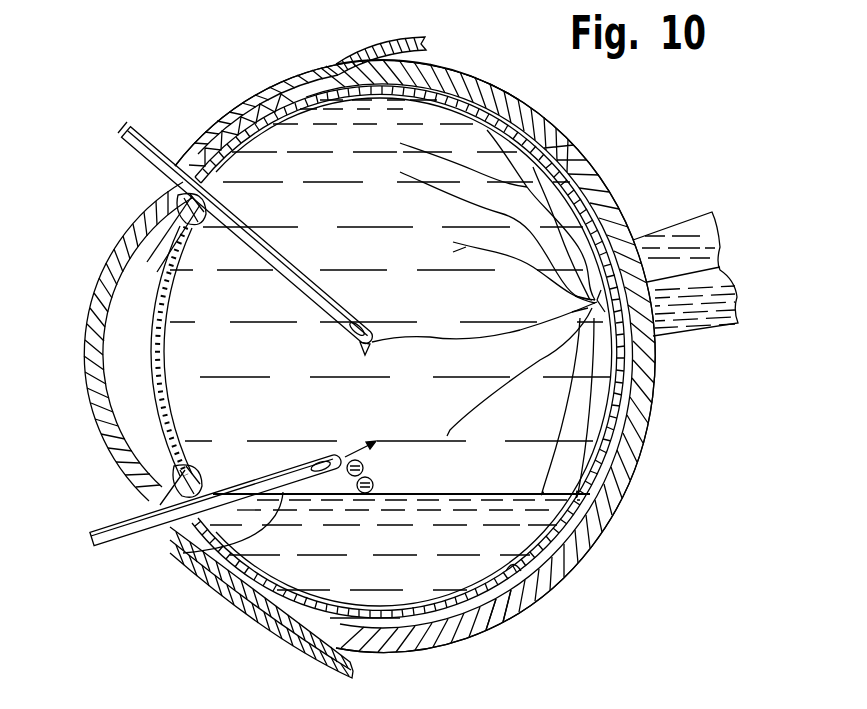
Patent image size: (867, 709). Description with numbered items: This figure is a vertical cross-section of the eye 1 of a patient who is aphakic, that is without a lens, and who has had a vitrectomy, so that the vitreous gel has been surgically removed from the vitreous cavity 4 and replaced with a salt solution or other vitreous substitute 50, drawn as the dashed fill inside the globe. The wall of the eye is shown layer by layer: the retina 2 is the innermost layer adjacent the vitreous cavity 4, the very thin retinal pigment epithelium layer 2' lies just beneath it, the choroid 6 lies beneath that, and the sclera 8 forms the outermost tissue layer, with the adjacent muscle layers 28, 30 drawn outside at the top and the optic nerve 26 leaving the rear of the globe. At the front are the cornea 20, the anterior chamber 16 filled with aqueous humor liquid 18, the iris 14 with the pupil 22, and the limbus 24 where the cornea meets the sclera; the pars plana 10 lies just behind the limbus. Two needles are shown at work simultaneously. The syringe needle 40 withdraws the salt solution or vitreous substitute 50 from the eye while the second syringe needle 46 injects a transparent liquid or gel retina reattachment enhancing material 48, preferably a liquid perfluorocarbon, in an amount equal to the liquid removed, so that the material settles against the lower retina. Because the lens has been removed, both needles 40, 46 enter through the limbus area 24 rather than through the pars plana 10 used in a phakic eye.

The eye 1 is at (600, 137).
The retina 2 is at (407, 365).
The retinal pigment epithelium layer 2' is at (506, 632).
The vitreous cavity 4 is at (540, 213).
The choroid 6 is at (583, 551).
The sclera 8 is at (606, 524).
The pars plana 10 is at (228, 620).
The iris 14 is at (165, 232).
The anterior chamber 16 is at (140, 258).
The aqueous humor liquid 18 is at (125, 302).
The cornea 20 is at (90, 414).
The pupil 22 is at (150, 410).
The limbus 24 is at (180, 153).
The optic nerve 26 is at (683, 213).
The muscle layer 28 is at (392, 34).
The muscle layer 30 is at (433, 50).
The syringe needle 40 is at (235, 212).
The second syringe needle 46 is at (187, 552).
The retina reattachment enhancing material 48 is at (553, 494).
The vitreous substitute 50 is at (480, 143).